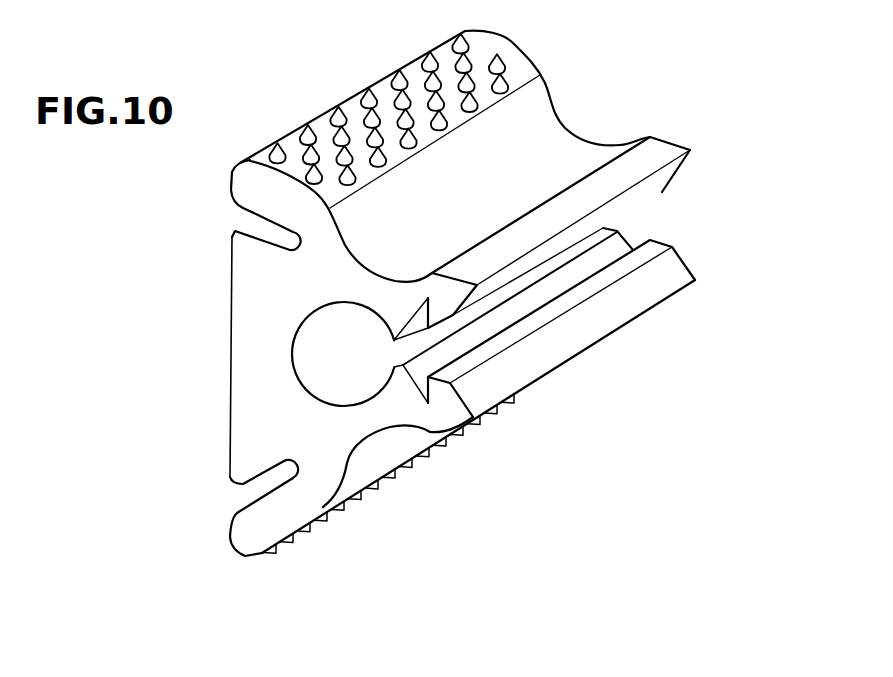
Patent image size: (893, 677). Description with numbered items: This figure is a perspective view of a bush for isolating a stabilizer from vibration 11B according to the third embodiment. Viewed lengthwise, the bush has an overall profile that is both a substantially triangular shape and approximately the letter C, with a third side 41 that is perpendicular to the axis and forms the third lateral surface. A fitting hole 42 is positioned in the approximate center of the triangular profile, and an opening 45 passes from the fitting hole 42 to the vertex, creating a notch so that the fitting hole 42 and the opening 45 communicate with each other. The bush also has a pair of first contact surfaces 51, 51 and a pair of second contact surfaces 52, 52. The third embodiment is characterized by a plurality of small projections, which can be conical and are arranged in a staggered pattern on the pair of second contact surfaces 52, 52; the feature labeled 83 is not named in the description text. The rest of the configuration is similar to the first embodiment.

The bush for isolating a stabilizer from vibration 11B is at (190, 292).
The third side 41 is at (232, 386).
The fitting hole 42 is at (312, 396).
The opening 45 is at (656, 217).
The first contact surface 51 is at (655, 153).
The second contact surface 52 is at (520, 66).
The spikes / teeth 83 is at (338, 108).